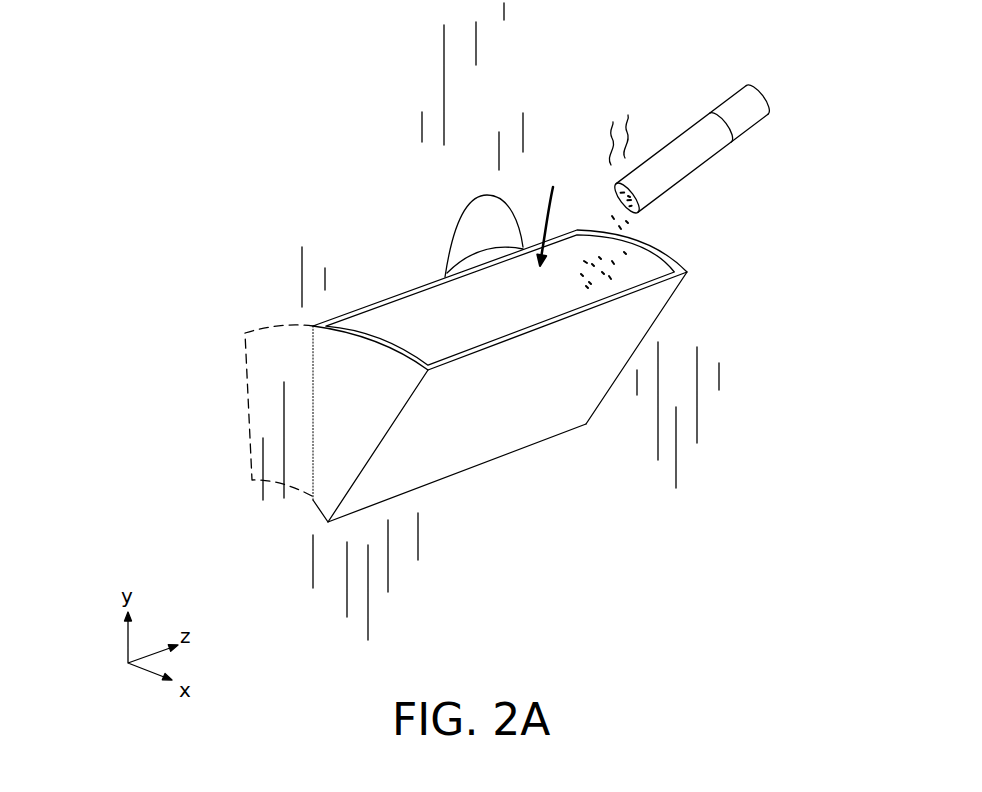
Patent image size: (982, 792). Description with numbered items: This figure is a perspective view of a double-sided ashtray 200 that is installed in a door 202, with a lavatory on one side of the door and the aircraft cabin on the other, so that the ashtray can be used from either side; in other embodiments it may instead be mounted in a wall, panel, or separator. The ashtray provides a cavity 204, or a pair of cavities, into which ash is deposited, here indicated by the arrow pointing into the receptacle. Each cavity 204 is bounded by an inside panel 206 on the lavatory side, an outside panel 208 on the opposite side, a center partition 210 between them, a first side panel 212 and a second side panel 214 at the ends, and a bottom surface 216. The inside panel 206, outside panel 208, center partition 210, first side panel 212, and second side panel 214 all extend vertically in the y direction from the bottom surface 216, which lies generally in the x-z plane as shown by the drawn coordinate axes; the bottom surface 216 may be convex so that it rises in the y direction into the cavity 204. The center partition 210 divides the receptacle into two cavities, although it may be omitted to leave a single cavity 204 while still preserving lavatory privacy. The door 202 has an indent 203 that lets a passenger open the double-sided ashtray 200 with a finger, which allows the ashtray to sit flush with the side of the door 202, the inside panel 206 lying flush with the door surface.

The double-sided ashtray 200 is at (145, 195).
The door 202 is at (473, 160).
The indent 203 is at (467, 227).
The cavity 204 is at (553, 207).
The inside panel 206 is at (528, 427).
The outside panel 208 is at (252, 425).
The center partition 210 is at (405, 310).
The first side panel 212 is at (653, 260).
The second side panel 214 is at (327, 443).
The bottom surface 216 is at (321, 510).